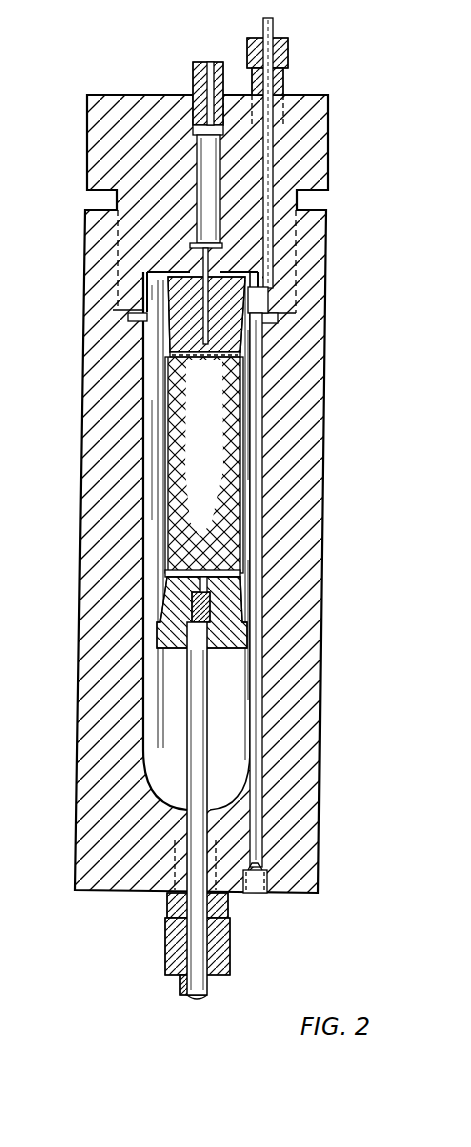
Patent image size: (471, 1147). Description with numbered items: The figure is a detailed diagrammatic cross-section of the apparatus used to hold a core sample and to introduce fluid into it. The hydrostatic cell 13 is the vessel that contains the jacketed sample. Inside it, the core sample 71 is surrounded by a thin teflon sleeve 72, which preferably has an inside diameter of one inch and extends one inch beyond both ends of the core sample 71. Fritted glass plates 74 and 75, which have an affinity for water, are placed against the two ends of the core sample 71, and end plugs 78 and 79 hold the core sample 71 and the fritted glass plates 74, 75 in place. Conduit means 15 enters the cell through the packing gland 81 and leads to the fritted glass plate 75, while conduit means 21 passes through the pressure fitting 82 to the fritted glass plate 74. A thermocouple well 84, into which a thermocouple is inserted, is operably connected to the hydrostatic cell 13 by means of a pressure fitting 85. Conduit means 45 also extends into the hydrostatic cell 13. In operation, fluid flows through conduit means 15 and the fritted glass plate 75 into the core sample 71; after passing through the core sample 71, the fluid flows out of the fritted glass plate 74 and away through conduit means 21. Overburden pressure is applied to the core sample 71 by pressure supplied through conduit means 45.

The hydrostatic cell 13 is at (322, 754).
The conduit means 15 is at (187, 994).
The conduit means 21 is at (210, 62).
The conduit means 45 is at (267, 893).
The core sample 71 is at (213, 437).
The teflon sleeve 72 is at (250, 458).
The fritted glass plate 74 is at (240, 373).
The fritted glass plate 75 is at (160, 594).
The end plug 78 is at (247, 626).
The end plug 79 is at (262, 328).
The packing gland 81 is at (177, 925).
The pressure fitting 82 is at (222, 70).
The thermocouple well 84 is at (273, 26).
The pressure fitting 85 is at (288, 86).